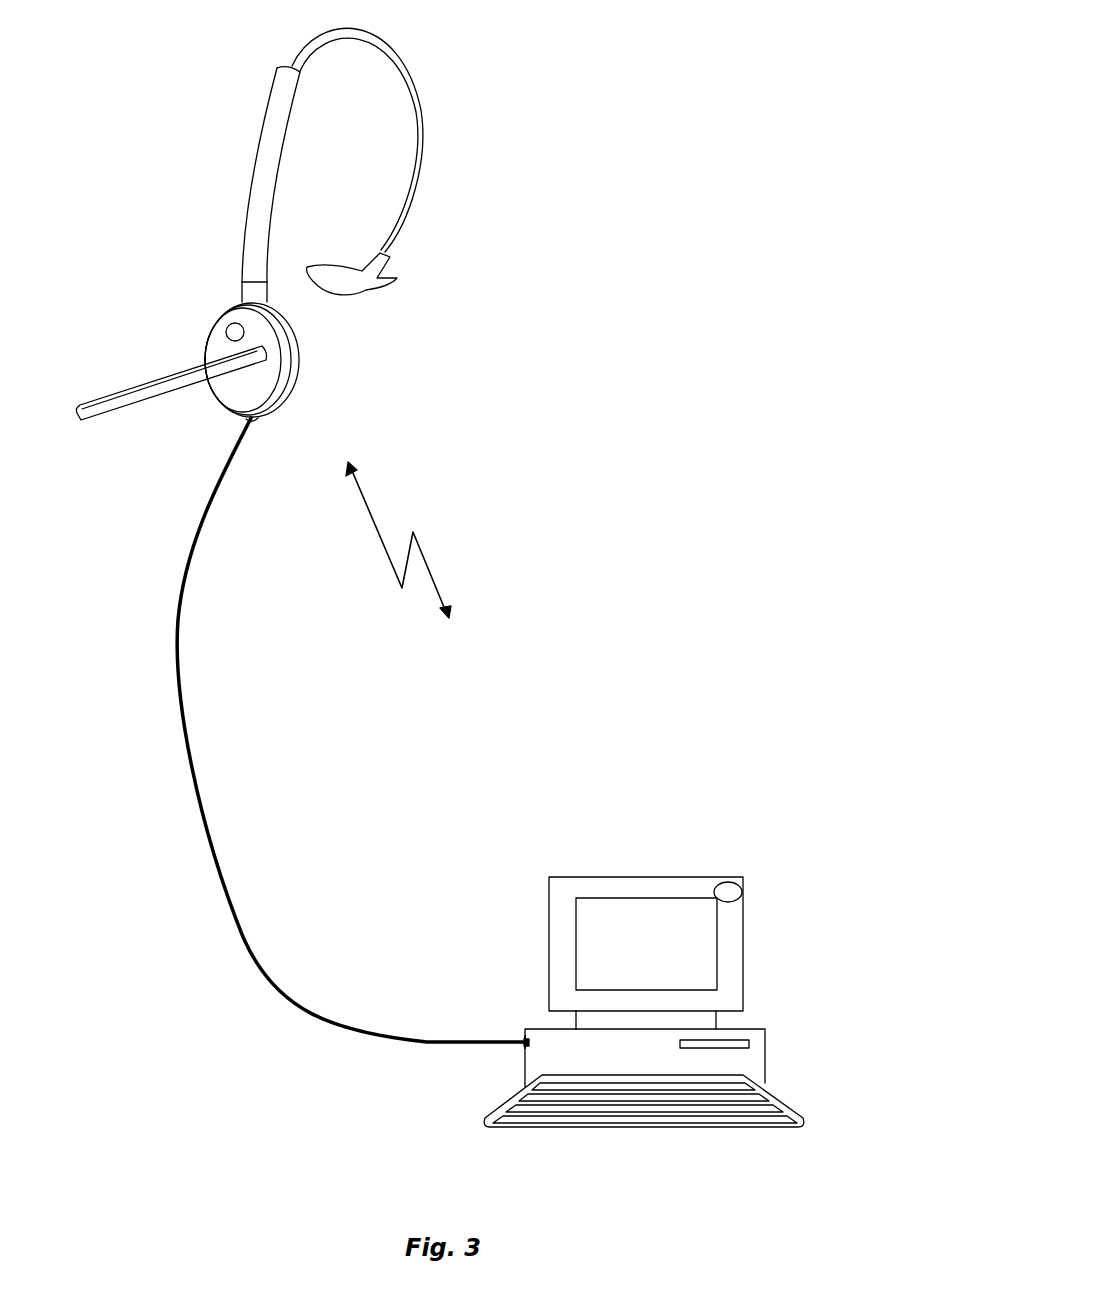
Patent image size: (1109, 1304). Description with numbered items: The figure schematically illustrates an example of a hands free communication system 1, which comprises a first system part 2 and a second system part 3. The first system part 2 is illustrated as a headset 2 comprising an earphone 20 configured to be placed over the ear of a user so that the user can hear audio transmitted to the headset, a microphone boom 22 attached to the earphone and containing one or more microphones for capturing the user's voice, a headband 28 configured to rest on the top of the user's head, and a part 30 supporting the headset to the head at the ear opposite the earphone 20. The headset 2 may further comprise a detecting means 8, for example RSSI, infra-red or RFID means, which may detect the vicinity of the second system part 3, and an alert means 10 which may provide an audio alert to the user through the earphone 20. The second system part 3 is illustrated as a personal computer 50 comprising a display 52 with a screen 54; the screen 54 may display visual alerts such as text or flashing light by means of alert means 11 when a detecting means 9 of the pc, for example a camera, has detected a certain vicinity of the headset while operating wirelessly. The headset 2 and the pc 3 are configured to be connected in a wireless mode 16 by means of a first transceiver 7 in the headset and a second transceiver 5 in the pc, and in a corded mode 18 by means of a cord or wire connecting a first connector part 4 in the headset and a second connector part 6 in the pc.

The hands free communication system 1 is at (746, 187).
The headset 2 is at (446, 105).
The second system part 3 is at (545, 842).
The first connector part 4 is at (260, 418).
The second transceiver 5 is at (552, 1059).
The personal computer 50 is at (645, 1058).
The second connector part 6 is at (523, 1032).
The first transceiver 7 is at (215, 343).
The earphone 20 is at (252, 360).
The alert means 10 is at (252, 360).
The detecting means 8 is at (244, 329).
The detecting means 9 is at (733, 897).
The alert means 11 is at (692, 957).
The display 52 is at (646, 944).
The screen 54 is at (646, 944).
The wireless mode 16 is at (412, 540).
The corded mode 18 is at (353, 732).
The microphone boom 22 is at (167, 387).
The headband 28 is at (262, 146).
The supporting part 30 is at (372, 282).